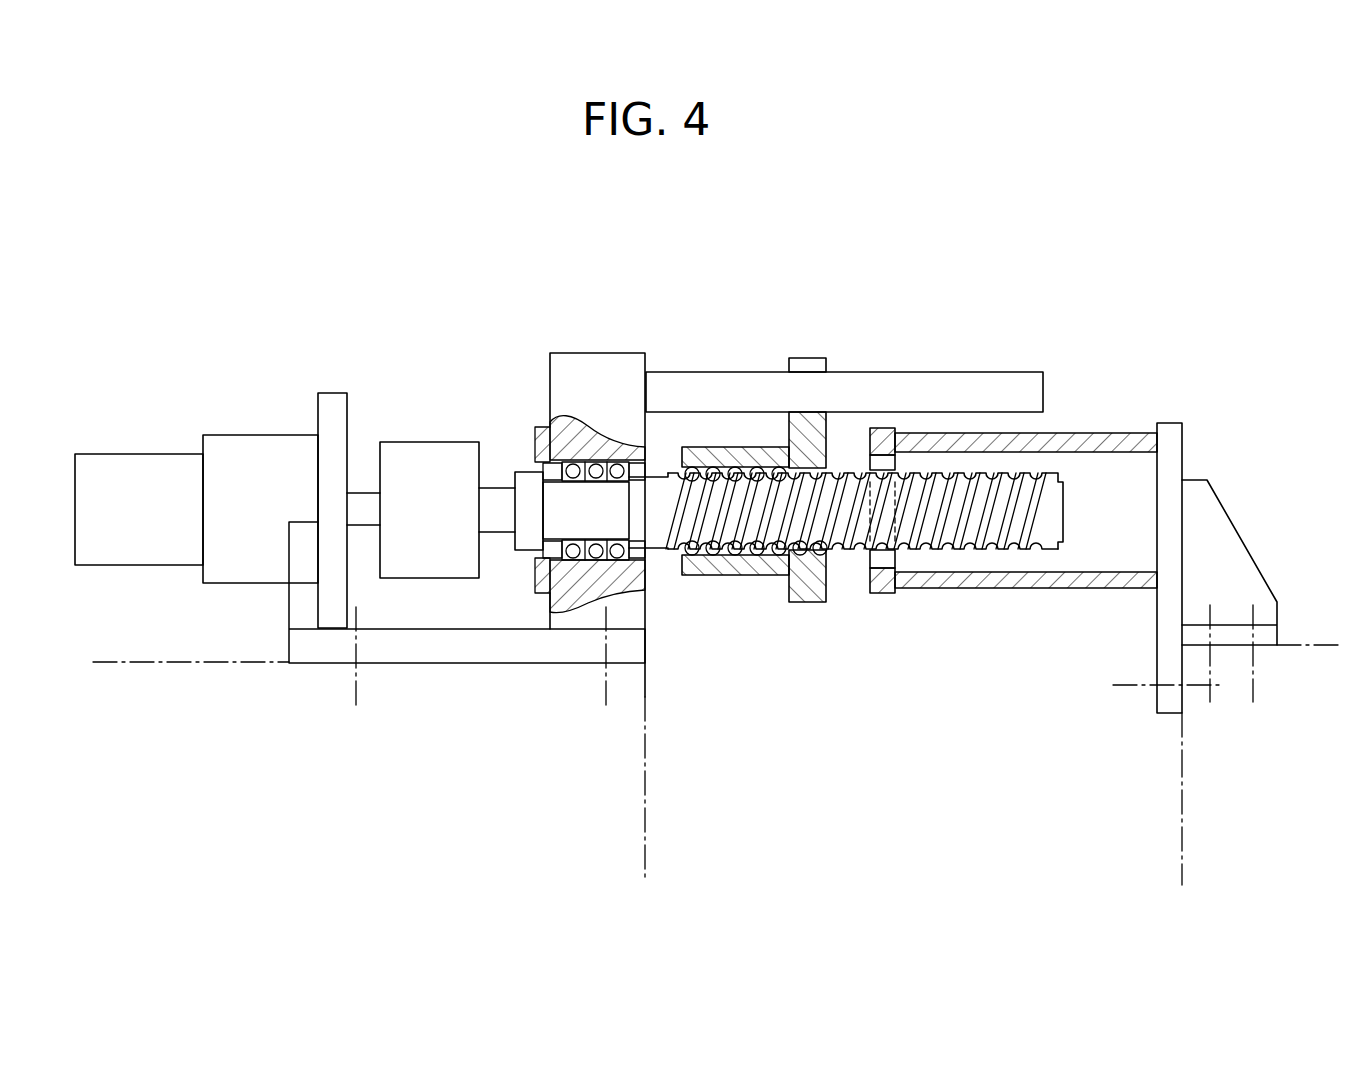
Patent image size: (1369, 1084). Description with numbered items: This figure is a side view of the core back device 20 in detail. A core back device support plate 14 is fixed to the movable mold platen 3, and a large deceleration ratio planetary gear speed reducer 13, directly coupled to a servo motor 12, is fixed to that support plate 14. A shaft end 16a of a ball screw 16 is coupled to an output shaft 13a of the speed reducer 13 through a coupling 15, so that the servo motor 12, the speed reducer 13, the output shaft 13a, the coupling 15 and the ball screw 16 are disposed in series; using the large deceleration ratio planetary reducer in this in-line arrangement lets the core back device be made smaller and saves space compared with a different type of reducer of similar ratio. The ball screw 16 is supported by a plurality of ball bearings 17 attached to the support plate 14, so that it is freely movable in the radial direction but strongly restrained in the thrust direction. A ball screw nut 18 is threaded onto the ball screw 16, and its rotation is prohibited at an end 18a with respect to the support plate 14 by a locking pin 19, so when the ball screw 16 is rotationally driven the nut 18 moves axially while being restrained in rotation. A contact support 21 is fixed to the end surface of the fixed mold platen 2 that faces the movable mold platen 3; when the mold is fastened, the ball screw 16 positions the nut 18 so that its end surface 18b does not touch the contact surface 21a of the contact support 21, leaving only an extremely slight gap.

The fixed mold platen 2 is at (1180, 808).
The movable mold platen 3 is at (645, 790).
The servo motor 12 is at (115, 452).
The large deceleration ratio planetary gear speed reducer 13 is at (235, 435).
The output shaft 13a is at (365, 492).
The core back device support plate 14 is at (586, 353).
The coupling 15 is at (440, 442).
The ball screw 16 is at (663, 549).
The shaft end 16a is at (497, 533).
The ball bearings 17 is at (590, 568).
The ball screw nut 18 is at (770, 576).
The end 18a is at (808, 357).
The end surface 18b is at (827, 577).
The locking pin 19 is at (968, 372).
The core back device 20 is at (674, 282).
The contact support 21 is at (1100, 433).
The contact surface 21a is at (862, 580).